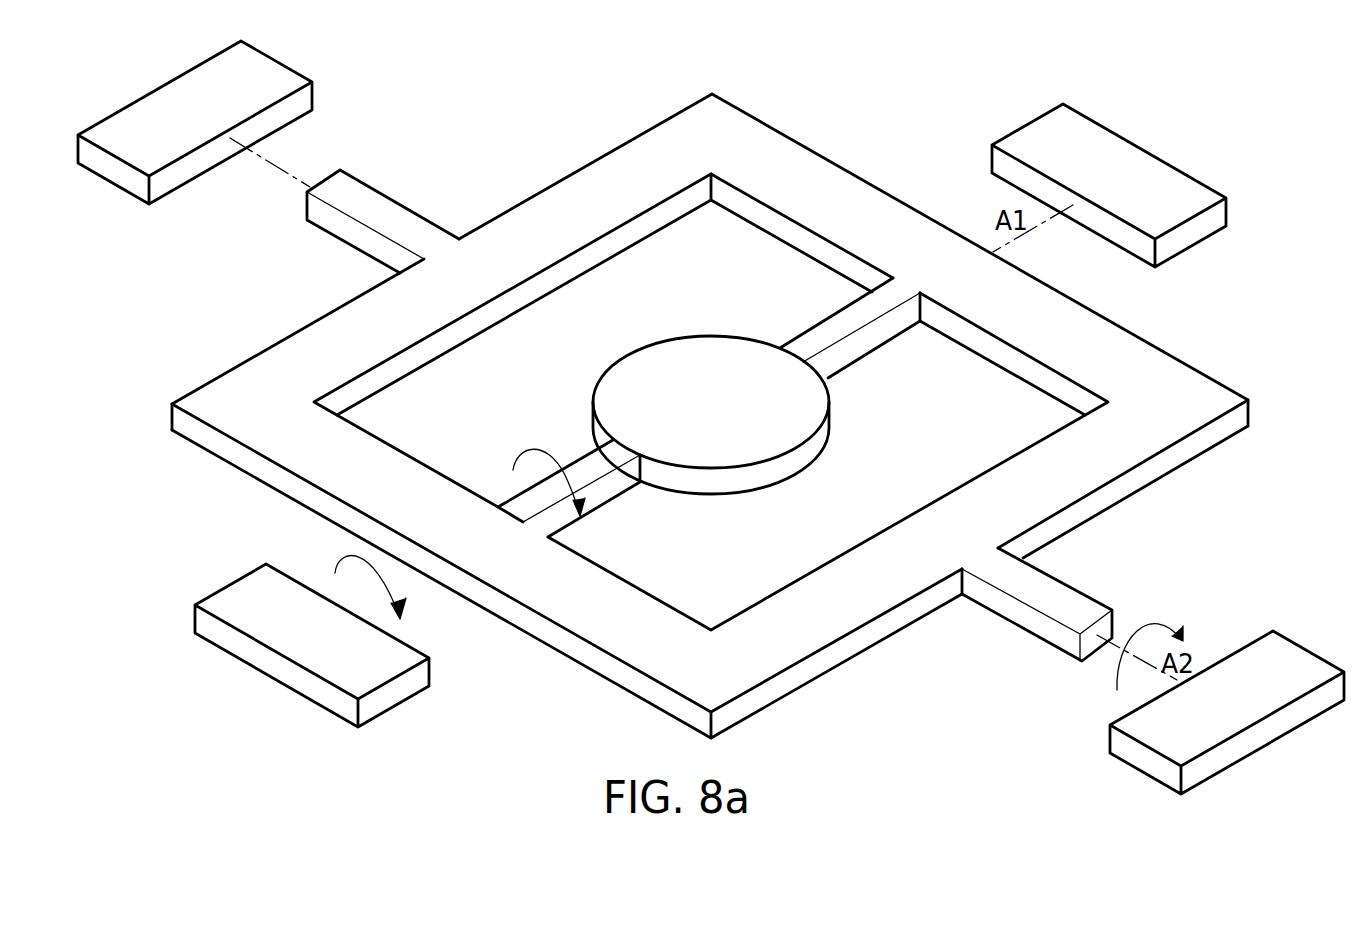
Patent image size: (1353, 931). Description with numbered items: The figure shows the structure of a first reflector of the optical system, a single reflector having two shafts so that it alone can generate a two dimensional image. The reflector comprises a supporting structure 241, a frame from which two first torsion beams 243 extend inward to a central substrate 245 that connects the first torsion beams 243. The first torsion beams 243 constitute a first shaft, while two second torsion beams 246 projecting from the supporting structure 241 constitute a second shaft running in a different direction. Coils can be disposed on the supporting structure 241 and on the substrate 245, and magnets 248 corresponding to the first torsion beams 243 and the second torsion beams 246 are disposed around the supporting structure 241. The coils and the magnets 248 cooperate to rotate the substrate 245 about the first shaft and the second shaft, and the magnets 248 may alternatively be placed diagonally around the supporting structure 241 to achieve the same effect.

The supporting structure 241 is at (1122, 447).
The first torsion beams 243 is at (843, 323).
The substrate 245 is at (710, 362).
The second torsion beams 246 is at (378, 210).
The magnets 248 is at (113, 170).